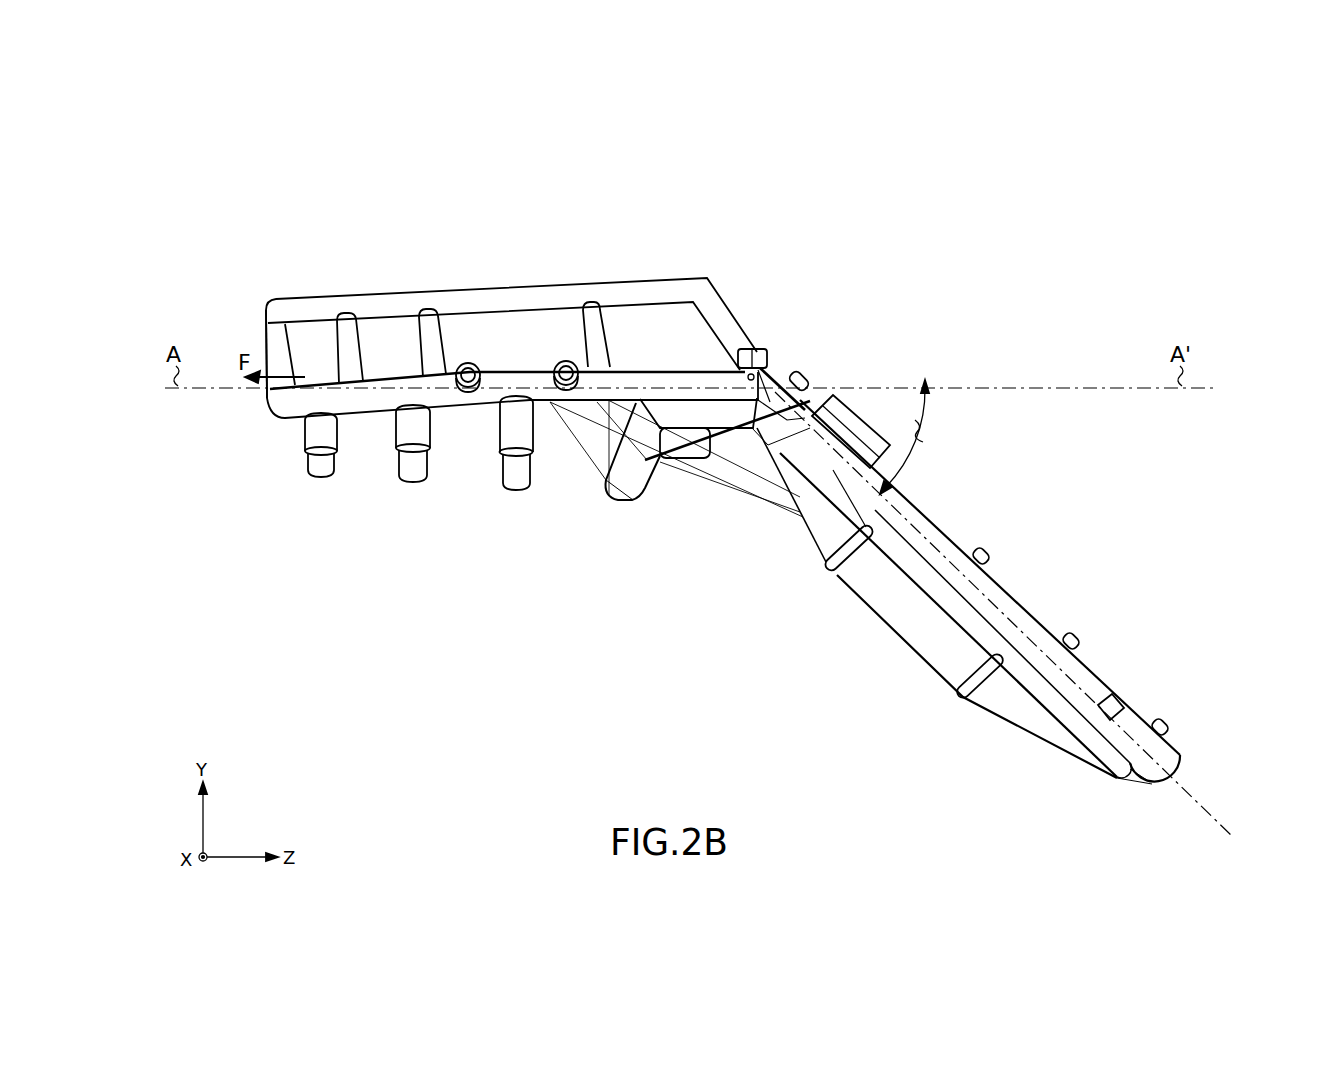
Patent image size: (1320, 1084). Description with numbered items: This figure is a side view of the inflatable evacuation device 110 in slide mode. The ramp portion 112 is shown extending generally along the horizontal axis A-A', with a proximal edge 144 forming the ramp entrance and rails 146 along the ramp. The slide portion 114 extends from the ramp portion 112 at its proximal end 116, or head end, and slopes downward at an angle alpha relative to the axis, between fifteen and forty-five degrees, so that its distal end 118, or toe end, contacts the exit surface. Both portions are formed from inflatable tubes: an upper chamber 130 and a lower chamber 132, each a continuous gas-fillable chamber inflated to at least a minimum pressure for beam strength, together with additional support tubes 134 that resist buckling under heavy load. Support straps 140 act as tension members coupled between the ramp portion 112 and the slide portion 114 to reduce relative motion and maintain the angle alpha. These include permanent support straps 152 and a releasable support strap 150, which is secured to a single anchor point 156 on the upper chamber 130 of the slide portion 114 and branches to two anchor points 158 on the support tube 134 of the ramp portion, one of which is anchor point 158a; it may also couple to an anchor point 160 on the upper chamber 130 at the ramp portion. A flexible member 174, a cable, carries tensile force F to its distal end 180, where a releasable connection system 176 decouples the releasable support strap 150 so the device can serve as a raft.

The inflatable evacuation device 110 is at (163, 214).
The ramp portion 112 is at (780, 212).
The slide portion 114 is at (1190, 212).
The proximal end 116 is at (796, 352).
The distal end 118 is at (1200, 768).
The upper chamber 130 is at (385, 402).
The lower chamber 132 is at (1053, 700).
The support tubes 134 is at (607, 498).
The support straps 140 is at (805, 637).
The proximal edge 144 is at (233, 438).
The rails 146 is at (555, 293).
The releasable support strap 150 is at (748, 402).
The permanent support straps 152 is at (820, 557).
The anchor point 156 is at (805, 398).
The anchor point 158 is at (625, 660).
The anchor point 158a is at (657, 470).
The anchor point 160 is at (547, 405).
The flexible member 174 is at (383, 370).
The releasable connection system 176 is at (748, 402).
The distal end 180 is at (802, 391).